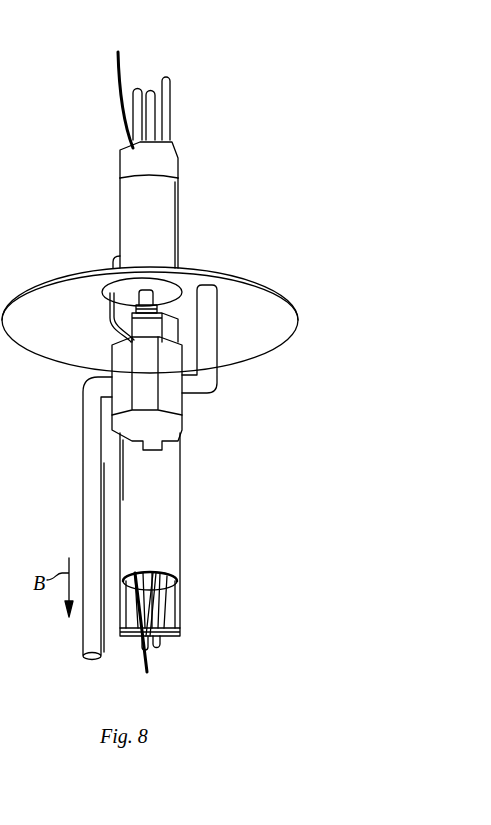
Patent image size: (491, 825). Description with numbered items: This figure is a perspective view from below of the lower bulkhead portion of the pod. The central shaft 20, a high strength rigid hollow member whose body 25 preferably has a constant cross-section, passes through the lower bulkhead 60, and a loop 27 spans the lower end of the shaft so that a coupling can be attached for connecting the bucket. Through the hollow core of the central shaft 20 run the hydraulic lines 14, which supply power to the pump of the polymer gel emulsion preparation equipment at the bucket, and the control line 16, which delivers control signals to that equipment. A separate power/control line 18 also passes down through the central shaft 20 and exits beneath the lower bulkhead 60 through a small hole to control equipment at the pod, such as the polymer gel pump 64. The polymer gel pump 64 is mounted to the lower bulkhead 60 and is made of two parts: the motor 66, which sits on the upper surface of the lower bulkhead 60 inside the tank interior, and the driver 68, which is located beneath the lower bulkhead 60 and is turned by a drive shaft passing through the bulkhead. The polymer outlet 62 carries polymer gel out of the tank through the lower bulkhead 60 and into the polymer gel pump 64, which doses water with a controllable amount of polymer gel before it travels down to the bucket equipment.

The hydraulic lines 14 is at (139, 88).
The control line 16 is at (118, 80).
The power/control line 18 is at (170, 107).
The central shaft 20 is at (106, 160).
The body 25 is at (168, 165).
The loop 27 is at (177, 608).
The lower bulkhead 60 is at (292, 361).
The polymer outlet 62 is at (210, 358).
The polymer gel pump 64 is at (212, 244).
The motor 66 is at (135, 227).
The driver 68 is at (173, 403).